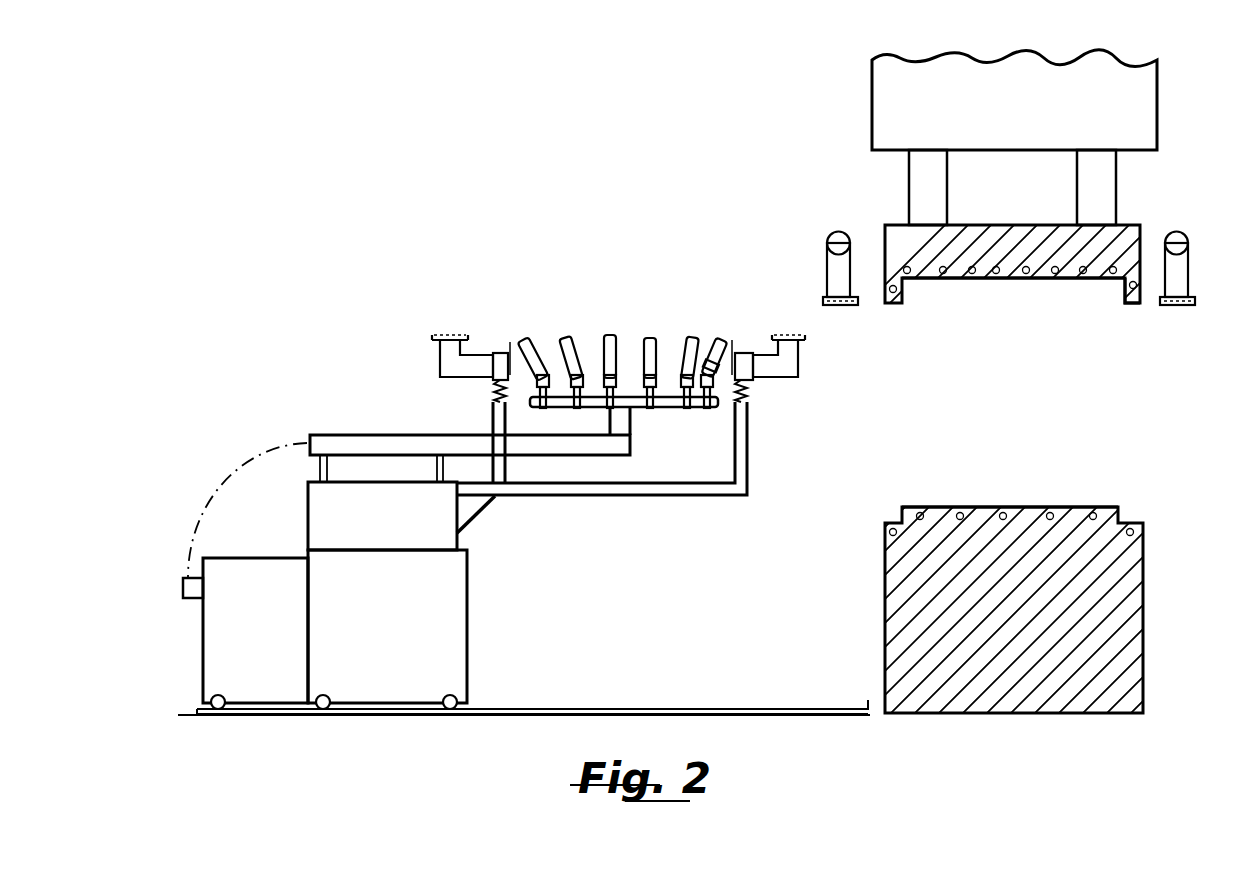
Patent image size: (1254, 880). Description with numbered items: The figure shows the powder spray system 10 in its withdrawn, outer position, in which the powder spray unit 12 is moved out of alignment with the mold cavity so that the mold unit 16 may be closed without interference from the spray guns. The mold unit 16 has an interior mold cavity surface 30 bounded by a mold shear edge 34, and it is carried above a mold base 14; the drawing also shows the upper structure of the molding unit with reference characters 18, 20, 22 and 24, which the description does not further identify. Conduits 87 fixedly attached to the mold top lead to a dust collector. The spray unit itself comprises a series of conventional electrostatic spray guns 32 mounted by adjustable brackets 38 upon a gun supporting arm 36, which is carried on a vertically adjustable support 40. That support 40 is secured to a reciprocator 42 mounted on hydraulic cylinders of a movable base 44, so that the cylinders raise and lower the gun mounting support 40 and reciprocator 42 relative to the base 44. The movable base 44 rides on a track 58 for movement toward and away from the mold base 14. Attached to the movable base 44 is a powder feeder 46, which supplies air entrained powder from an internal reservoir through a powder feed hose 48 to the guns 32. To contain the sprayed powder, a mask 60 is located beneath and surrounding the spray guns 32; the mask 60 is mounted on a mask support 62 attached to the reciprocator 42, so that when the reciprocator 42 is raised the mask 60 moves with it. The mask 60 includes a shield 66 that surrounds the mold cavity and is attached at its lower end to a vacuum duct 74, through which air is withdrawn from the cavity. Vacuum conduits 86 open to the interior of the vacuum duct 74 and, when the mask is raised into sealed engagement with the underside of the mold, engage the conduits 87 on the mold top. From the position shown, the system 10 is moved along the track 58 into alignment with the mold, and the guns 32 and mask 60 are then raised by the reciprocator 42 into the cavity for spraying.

The powder spray system 10 is at (1196, 399).
The powder spray unit 12 is at (666, 321).
The mold base 14 is at (1147, 583).
The mold unit 16 is at (1015, 216).
The die surface 18 is at (964, 513).
The holes 20 is at (973, 273).
The press platen 22 is at (882, 98).
The support columns 24 is at (1117, 181).
The mold cavity surface 30 is at (1030, 285).
The spray guns 32 is at (530, 345).
The mold shear edge 34 is at (1128, 297).
The gun supporting arm 36 is at (670, 408).
The adjustable brackets 38 is at (652, 408).
The vertically adjustable support 40 is at (413, 440).
The reciprocator 42 is at (328, 528).
The movable base 44 is at (447, 636).
The powder feeder 46 is at (225, 640).
The powder feed hose 48 is at (220, 488).
The track 58 is at (525, 710).
The mask 60 is at (502, 331).
The mask support 62 is at (598, 486).
The shield 66 is at (513, 338).
The vacuum duct 74 is at (497, 378).
The vacuum conduits 86 is at (440, 366).
The conduits 87 is at (830, 275).